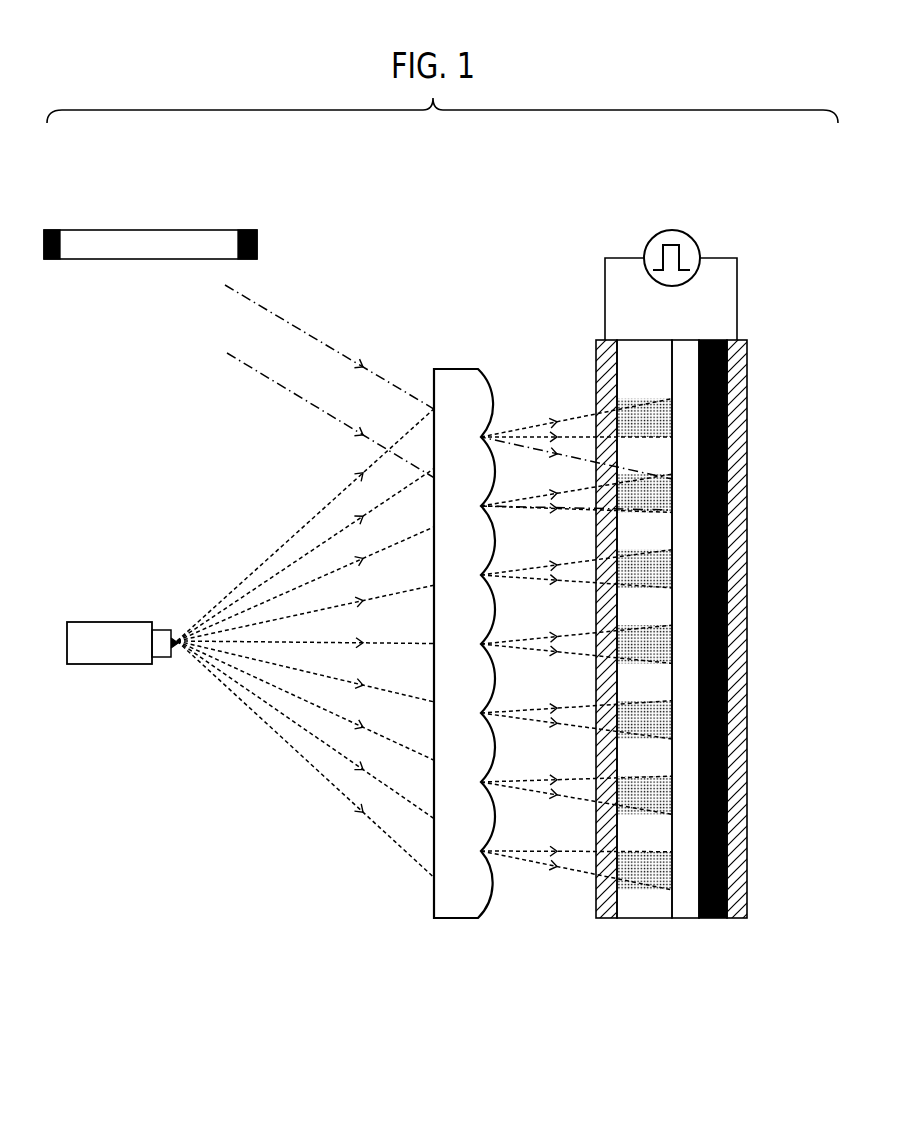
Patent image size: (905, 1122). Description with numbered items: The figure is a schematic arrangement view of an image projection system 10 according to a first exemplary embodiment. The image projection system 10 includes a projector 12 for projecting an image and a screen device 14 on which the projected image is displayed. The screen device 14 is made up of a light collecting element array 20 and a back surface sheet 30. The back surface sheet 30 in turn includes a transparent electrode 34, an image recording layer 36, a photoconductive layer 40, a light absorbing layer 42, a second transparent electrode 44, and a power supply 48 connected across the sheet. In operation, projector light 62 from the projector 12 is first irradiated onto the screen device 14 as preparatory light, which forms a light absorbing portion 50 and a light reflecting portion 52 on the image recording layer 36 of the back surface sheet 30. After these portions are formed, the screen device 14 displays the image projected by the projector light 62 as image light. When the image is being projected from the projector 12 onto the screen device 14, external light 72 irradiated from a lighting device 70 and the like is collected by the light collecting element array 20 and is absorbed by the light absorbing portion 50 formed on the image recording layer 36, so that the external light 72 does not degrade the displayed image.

The image projection system 10 is at (547, 201).
The projector 12 is at (95, 622).
The screen device 14 is at (418, 1003).
The light collecting element array 20 is at (460, 368).
The back surface sheet 30 is at (774, 388).
The transparent electrode 34 is at (602, 918).
The image recording layer 36 is at (633, 918).
The photoconductive layer 40 is at (677, 918).
The light absorbing layer 42 is at (712, 918).
The transparent electrode 44 is at (735, 918).
The power supply 48 is at (697, 240).
The light absorbing portion 50 is at (620, 400).
The light reflecting portion 52 is at (652, 377).
The projector light 62 is at (292, 530).
The lighting device 70 is at (194, 230).
The external light 72 is at (278, 386).